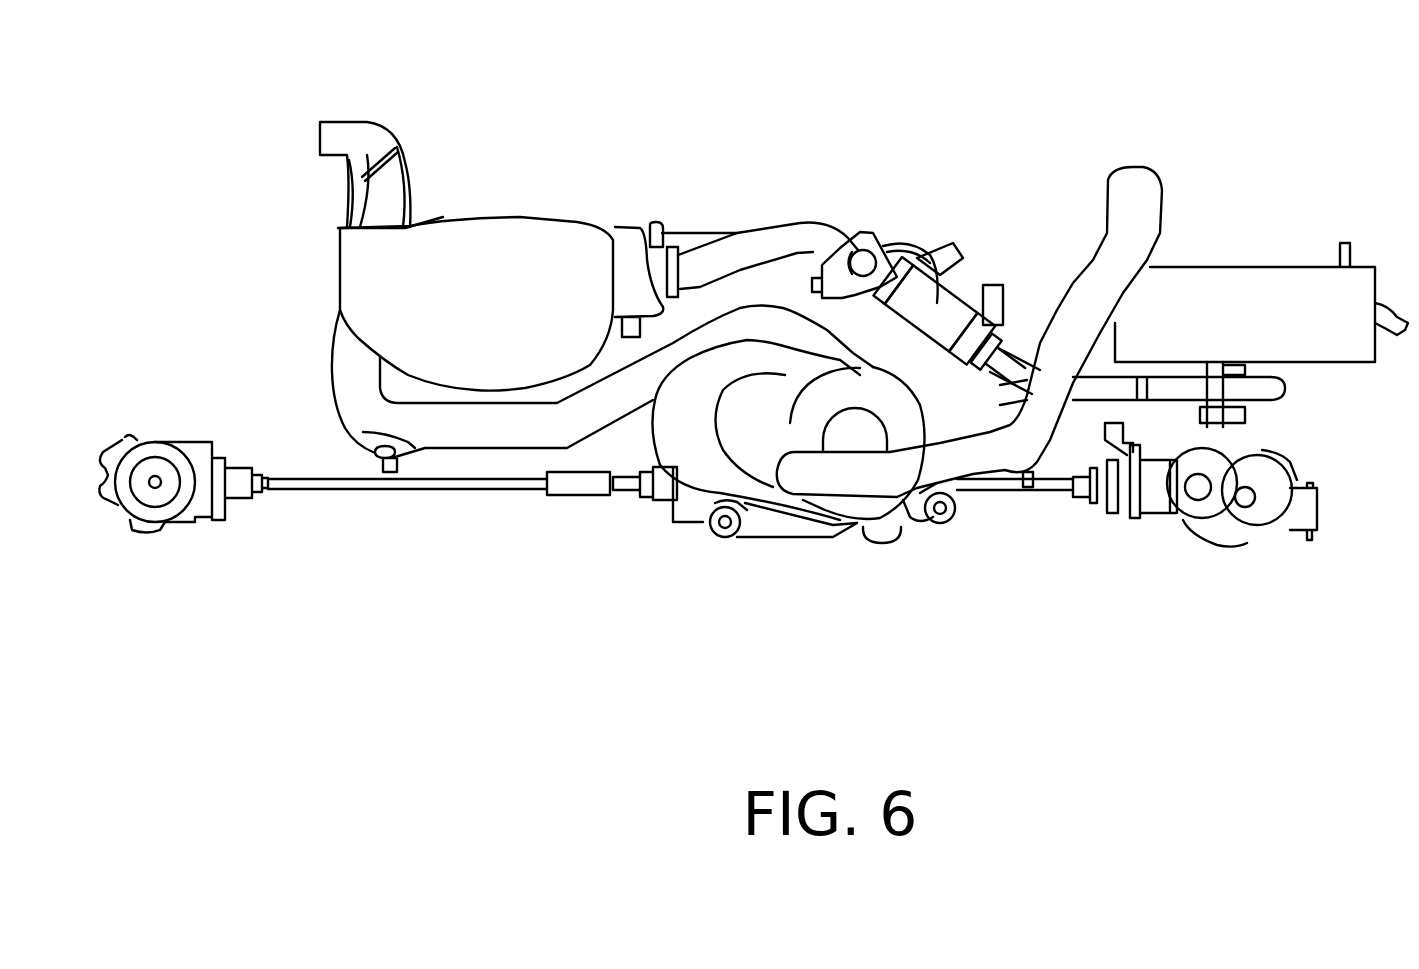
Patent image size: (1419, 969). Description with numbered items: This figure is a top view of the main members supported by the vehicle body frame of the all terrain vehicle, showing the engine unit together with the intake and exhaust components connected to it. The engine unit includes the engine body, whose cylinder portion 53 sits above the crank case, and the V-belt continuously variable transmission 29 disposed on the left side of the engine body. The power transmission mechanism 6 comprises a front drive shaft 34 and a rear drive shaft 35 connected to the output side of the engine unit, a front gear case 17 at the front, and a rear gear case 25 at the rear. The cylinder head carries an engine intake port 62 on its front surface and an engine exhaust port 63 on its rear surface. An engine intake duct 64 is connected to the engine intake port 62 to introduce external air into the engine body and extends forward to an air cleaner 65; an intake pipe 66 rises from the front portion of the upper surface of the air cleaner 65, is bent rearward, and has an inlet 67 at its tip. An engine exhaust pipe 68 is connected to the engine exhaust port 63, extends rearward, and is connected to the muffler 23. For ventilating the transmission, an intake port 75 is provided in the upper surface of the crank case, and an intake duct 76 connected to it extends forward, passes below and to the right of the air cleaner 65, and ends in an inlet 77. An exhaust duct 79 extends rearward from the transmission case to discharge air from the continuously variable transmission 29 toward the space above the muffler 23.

The power transmission mechanism 6 is at (596, 525).
The front gear case 17 is at (160, 450).
The muffler 23 is at (1253, 278).
The rear gear case 25 is at (1198, 517).
The V-belt continuously variable transmission 29 is at (757, 463).
The front drive shaft 34 is at (308, 487).
The rear drive shaft 35 is at (1020, 487).
The cylinder portion 53 is at (938, 303).
The engine intake port 62 is at (887, 250).
The engine exhaust port 63 is at (1018, 345).
The engine intake duct 64 is at (743, 250).
The air cleaner 65 is at (498, 217).
The intake pipe 66 is at (396, 170).
The inlet 67 is at (372, 152).
The engine exhaust pipe 68 is at (1270, 388).
The intake port 75 is at (800, 262).
The intake duct 76 is at (492, 435).
The inlet 77 is at (318, 127).
The exhaust duct 79 is at (936, 470).